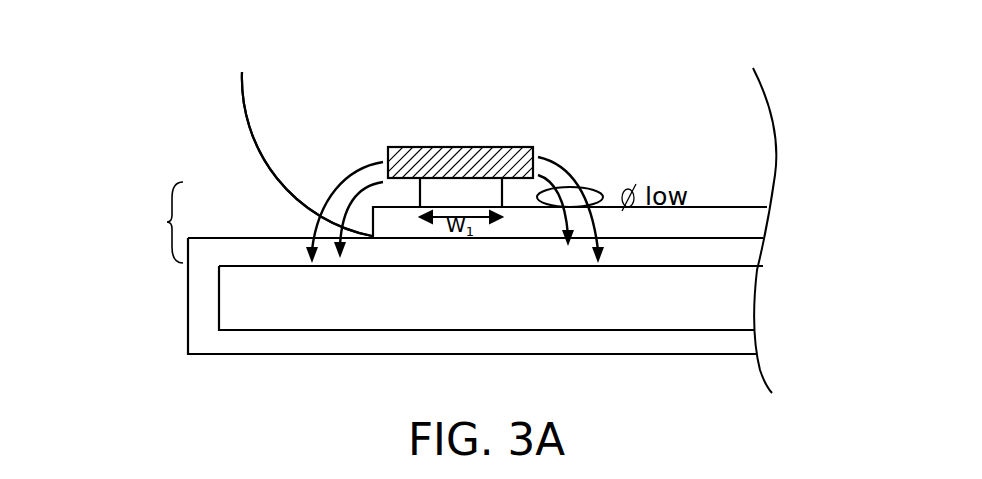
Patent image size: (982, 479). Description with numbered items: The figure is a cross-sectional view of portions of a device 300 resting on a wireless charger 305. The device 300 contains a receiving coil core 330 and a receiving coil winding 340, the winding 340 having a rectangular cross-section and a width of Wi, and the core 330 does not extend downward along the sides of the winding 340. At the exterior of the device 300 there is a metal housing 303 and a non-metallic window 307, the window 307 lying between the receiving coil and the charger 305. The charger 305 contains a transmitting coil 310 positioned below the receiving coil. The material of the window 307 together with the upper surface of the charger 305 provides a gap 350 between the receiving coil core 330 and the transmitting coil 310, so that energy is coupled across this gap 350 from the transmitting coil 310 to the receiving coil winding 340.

The device 300 is at (247, 123).
The metal housing 303 is at (263, 157).
The wireless charger 305 is at (645, 347).
The non-metallic window 307 is at (753, 218).
The transmitting coil 310 is at (230, 305).
The receiving coil core 330 is at (397, 160).
The receiving coil winding 340 is at (462, 192).
The gap 350 is at (128, 222).